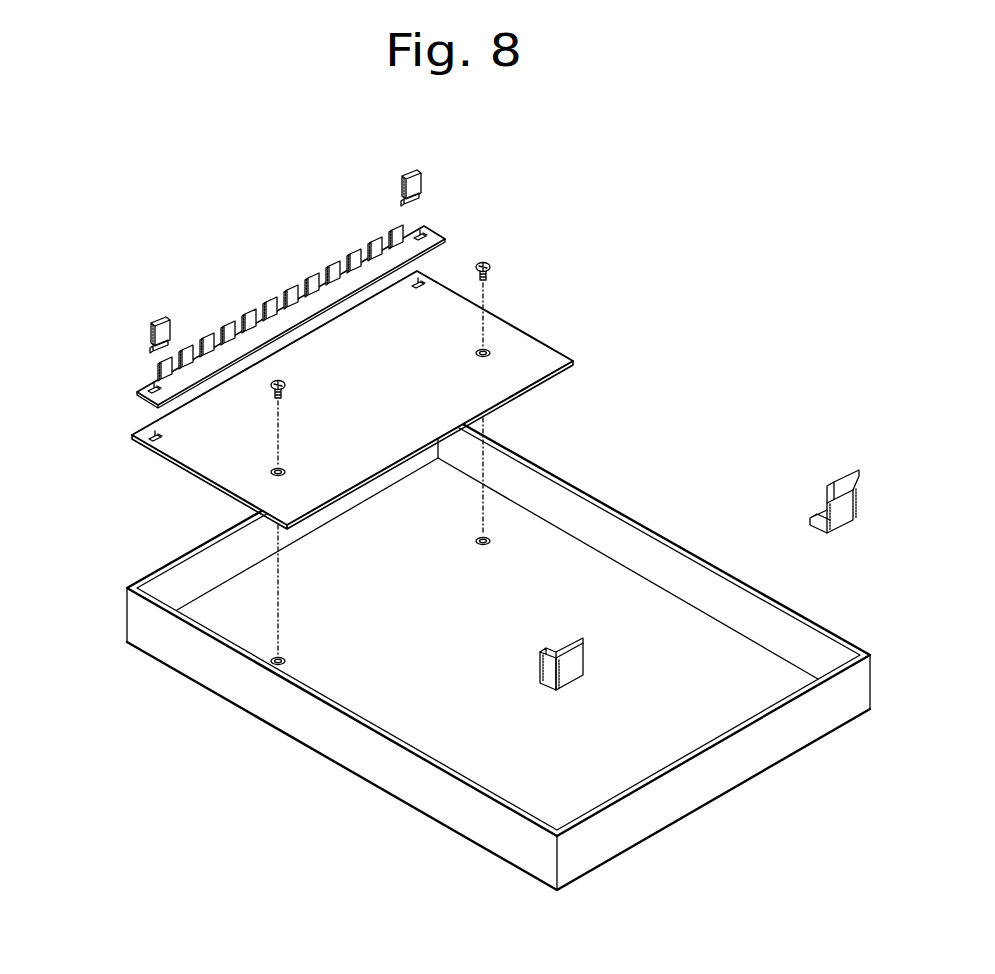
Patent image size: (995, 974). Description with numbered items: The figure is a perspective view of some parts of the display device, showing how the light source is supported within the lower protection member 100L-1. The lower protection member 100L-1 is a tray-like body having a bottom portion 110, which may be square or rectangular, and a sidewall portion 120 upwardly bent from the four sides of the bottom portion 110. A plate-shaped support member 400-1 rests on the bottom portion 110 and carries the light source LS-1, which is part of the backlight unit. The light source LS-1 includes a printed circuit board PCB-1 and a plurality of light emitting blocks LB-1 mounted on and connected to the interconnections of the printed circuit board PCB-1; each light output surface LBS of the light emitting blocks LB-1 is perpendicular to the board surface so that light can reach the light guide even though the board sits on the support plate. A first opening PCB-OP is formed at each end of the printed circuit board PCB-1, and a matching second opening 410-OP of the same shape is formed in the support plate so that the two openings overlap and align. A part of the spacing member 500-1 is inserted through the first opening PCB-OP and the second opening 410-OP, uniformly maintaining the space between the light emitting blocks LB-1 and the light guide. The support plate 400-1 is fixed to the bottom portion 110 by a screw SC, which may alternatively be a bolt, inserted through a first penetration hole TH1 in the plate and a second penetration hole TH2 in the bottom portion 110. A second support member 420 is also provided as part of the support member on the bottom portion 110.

The lower protection member 100L-1 is at (498, 650).
The bottom portion 110 is at (447, 712).
The sidewall portion 120 is at (337, 713).
The second support member 420 is at (577, 647).
The support plate 400-1 is at (301, 400).
The second opening 410-OP is at (153, 436).
The first penetration hole TH1 is at (491, 348).
The second penetration hole TH2 is at (489, 535).
The screw SC is at (486, 262).
The light source LS-1 is at (237, 286).
The printed circuit board PCB-1 is at (237, 315).
The first opening PCB-OP is at (154, 388).
The light emitting block LB-1 is at (280, 286).
The light output surface LBS is at (252, 322).
The spacing member 500-1 is at (165, 320).